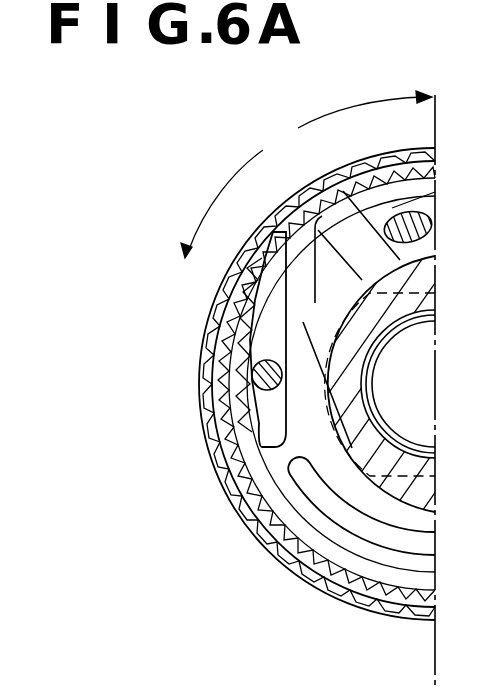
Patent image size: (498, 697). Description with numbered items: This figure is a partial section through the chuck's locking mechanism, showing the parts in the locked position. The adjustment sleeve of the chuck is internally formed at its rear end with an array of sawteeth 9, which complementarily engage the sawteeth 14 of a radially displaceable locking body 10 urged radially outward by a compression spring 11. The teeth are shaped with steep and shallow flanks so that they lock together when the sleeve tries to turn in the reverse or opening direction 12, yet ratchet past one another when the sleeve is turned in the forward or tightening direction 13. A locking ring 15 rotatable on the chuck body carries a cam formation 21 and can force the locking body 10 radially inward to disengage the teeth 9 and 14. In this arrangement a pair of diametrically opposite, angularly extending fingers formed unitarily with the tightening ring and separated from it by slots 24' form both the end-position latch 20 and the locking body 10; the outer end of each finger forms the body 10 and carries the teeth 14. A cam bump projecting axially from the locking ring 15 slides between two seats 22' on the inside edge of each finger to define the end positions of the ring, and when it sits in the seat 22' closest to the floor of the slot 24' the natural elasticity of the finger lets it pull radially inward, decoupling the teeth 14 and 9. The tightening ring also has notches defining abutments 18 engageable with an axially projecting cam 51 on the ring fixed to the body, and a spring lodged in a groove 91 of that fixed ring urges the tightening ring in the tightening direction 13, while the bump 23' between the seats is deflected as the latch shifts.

The sawteeth 9 is at (262, 503).
The locking body 10 is at (313, 226).
The compression spring 11 is at (163, 375).
The reverse or opening direction 12 is at (320, 117).
The forward or tightening direction 13 is at (222, 192).
The sawteeth 14 is at (268, 242).
The locking ring 15 is at (304, 576).
The abutments 18 is at (383, 225).
The latch 20 is at (262, 360).
The cam formation 21 is at (284, 415).
The seats 22' is at (176, 437).
The pawl tooth 23' is at (184, 327).
The slots 24' is at (202, 278).
The axially projecting cam 51 is at (435, 192).
The groove 91 is at (333, 510).